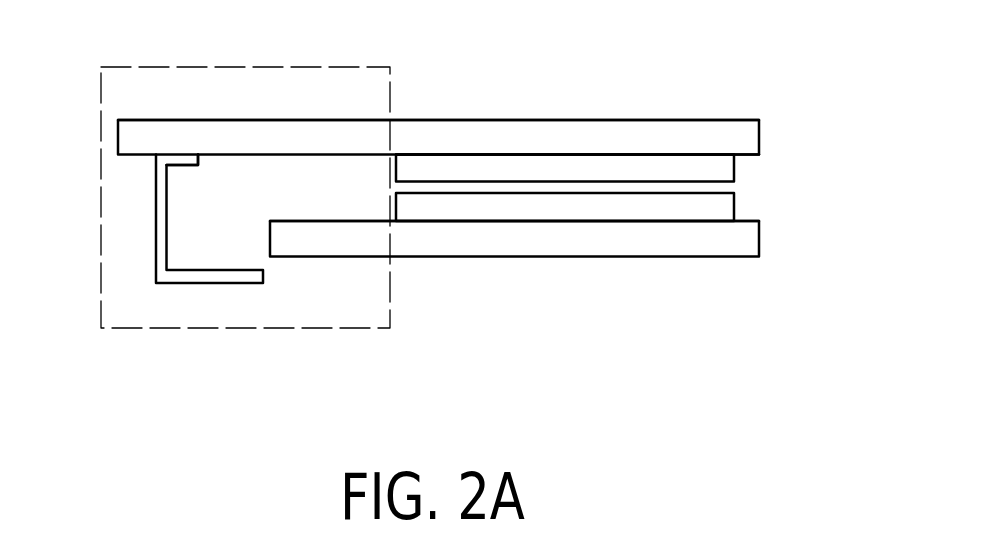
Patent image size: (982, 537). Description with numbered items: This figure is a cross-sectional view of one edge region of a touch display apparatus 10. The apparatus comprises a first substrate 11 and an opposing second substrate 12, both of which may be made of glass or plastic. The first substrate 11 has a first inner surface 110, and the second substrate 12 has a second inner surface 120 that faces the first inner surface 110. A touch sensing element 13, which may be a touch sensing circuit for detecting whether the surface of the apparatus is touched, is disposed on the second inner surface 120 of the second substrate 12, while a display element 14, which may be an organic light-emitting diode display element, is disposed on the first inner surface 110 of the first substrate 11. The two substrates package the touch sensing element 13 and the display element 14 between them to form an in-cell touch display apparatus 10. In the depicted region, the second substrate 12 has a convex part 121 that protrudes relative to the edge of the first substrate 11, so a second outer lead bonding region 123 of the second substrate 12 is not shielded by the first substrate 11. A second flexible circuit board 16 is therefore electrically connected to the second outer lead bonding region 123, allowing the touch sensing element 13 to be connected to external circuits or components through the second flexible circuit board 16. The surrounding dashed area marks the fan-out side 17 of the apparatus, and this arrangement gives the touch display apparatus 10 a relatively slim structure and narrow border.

The touch display apparatus 10 is at (738, 402).
The first substrate 11 is at (740, 242).
The first inner surface 110 is at (667, 224).
The second substrate 12 is at (740, 141).
The second inner surface 120 is at (668, 152).
The convex part 121 is at (220, 118).
The second outer lead bonding region 123 is at (206, 166).
The touch sensing element 13 is at (710, 172).
The display element 14 is at (710, 207).
The second flexible circuit board 16 is at (163, 230).
The fan-out side 17 is at (335, 330).